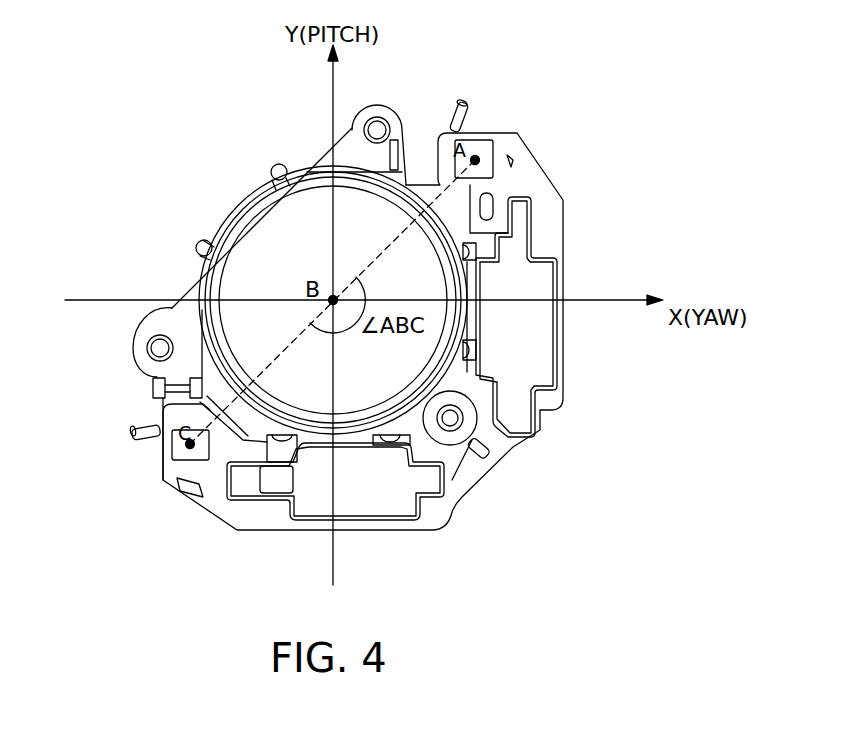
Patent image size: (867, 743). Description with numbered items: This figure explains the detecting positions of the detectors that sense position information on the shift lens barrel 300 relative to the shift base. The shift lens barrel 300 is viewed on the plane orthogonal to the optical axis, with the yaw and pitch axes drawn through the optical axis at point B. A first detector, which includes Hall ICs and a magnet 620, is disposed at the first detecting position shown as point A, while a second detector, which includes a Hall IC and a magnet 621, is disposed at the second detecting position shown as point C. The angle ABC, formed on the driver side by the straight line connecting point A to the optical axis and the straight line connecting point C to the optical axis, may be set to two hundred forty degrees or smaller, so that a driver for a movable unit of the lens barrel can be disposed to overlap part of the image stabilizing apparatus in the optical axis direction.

The shift lens barrel 300 is at (545, 200).
The magnet 620 is at (488, 148).
The magnet 621 is at (177, 451).